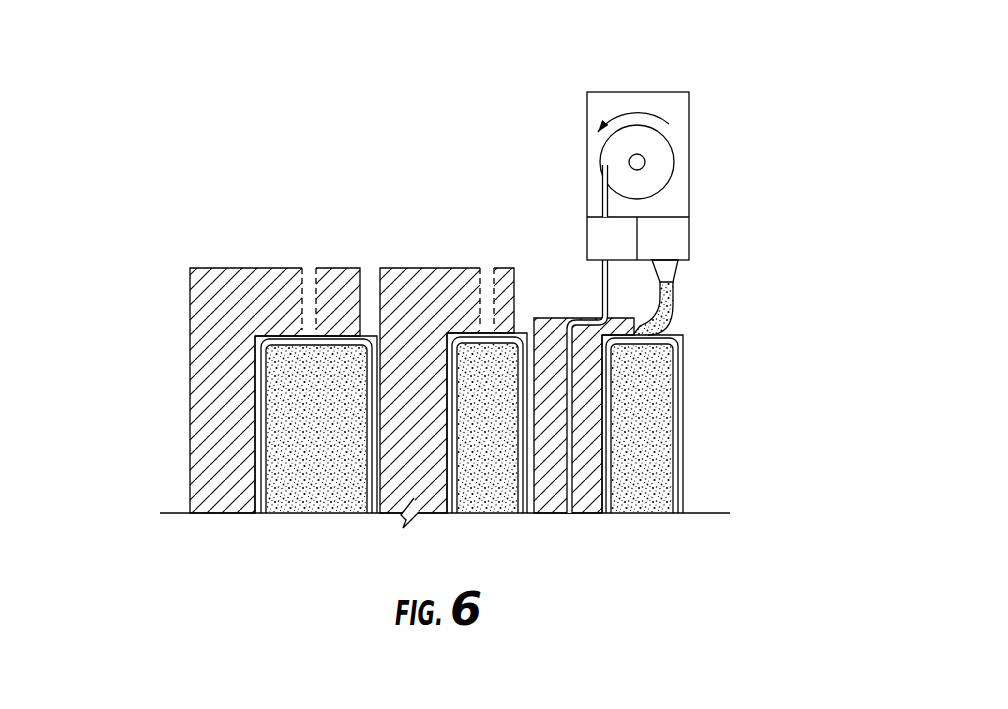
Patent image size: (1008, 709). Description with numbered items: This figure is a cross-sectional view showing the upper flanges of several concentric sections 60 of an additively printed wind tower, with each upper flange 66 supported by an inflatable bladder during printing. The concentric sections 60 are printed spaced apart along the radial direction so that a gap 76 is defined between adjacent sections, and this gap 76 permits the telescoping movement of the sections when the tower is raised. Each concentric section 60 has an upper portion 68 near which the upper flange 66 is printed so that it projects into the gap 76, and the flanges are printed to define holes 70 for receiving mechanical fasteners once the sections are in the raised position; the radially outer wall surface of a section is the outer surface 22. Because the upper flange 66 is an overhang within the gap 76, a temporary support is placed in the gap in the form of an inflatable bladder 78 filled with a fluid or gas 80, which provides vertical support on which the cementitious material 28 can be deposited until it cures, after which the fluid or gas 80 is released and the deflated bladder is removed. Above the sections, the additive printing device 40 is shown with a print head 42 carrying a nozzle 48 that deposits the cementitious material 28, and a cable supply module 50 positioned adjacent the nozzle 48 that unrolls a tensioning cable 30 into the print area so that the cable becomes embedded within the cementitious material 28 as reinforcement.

The outer surface 22 is at (188, 458).
The cementitious material 28 is at (668, 312).
The tensioning cable 30 is at (572, 486).
The additive printing device 40 is at (680, 59).
The print head 42 is at (692, 230).
The nozzle 48 is at (681, 267).
The cable supply module 50 is at (585, 229).
The concentric section 60 is at (442, 231).
The upper flange 66 is at (340, 280).
The upper portion 68 is at (188, 268).
The hole 70 is at (298, 297).
The gap 76 is at (316, 499).
The inflatable bladder 78 is at (265, 475).
The fluid or gas 80 is at (332, 437).